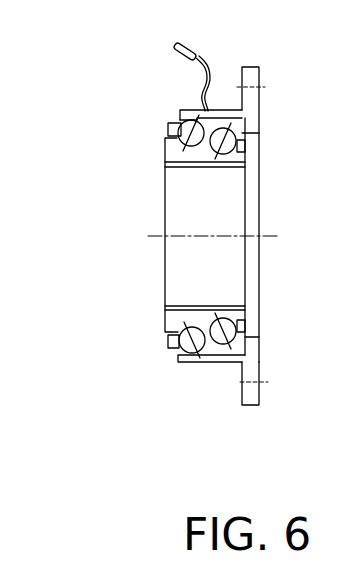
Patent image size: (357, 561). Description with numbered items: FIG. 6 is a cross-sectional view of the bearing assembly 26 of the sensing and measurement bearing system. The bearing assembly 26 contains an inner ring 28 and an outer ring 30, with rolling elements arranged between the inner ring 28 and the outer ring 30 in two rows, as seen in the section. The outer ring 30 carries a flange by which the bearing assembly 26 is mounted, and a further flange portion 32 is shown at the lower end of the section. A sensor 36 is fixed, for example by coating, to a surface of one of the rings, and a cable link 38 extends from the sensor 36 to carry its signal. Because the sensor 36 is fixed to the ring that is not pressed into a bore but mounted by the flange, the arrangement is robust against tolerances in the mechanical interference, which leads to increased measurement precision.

The bearing assembly 26 is at (106, 125).
The inner ring 28 is at (173, 302).
The outer ring 30 is at (266, 333).
The flange mounting portion 32 is at (243, 381).
The sensor 36 is at (186, 104).
The cable link 38 is at (193, 42).